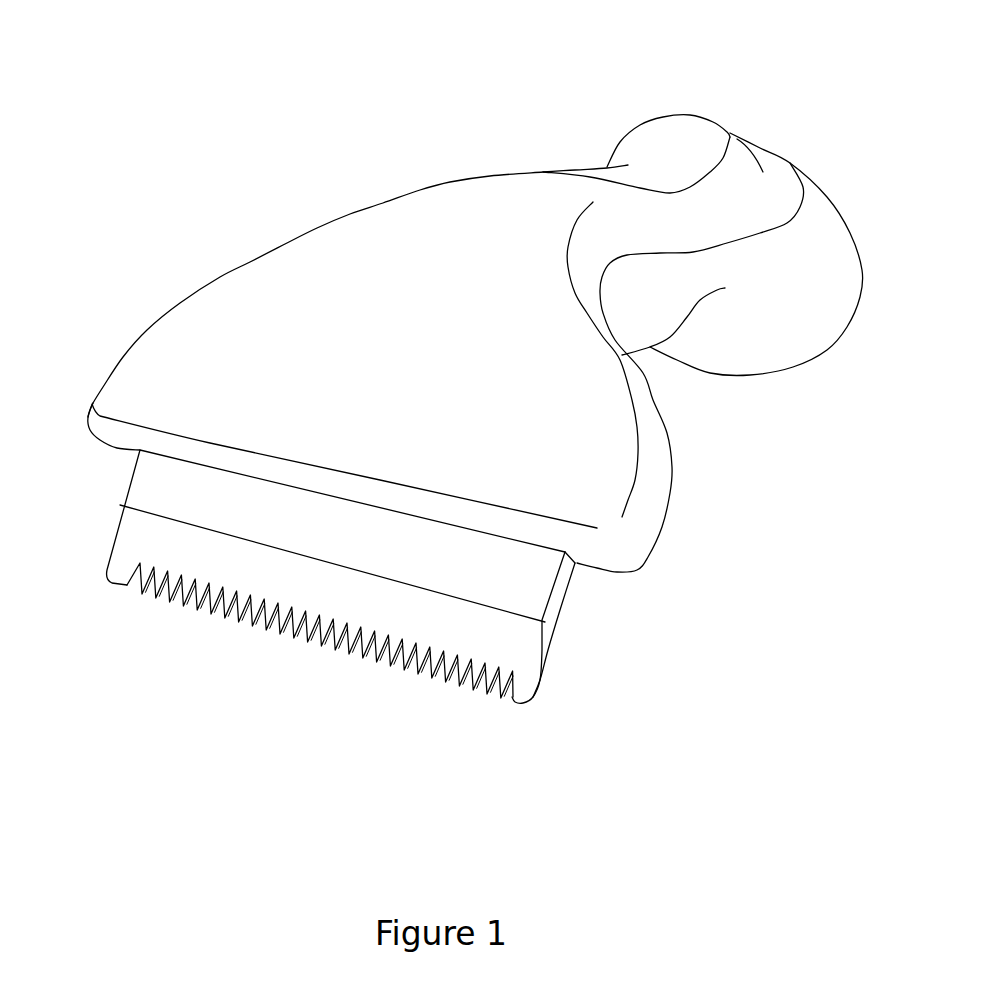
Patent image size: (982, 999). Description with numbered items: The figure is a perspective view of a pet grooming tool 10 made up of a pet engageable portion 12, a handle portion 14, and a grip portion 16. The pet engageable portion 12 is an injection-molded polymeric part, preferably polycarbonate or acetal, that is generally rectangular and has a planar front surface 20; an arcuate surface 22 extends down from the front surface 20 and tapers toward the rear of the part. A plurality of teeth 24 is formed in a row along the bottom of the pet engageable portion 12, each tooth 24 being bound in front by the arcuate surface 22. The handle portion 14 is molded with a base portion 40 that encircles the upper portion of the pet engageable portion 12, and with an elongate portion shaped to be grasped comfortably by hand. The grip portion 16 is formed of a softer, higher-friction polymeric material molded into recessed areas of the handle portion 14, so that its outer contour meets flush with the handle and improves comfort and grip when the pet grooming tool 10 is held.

The pet grooming tool 10 is at (337, 108).
The pet engageable portion 12 is at (165, 492).
The handle portion 14 is at (468, 247).
The grip portion 16 is at (670, 138).
The front surface 20 is at (528, 580).
The arcuate surface 22 is at (517, 645).
The teeth 24 is at (215, 610).
The base portion 40 is at (597, 459).